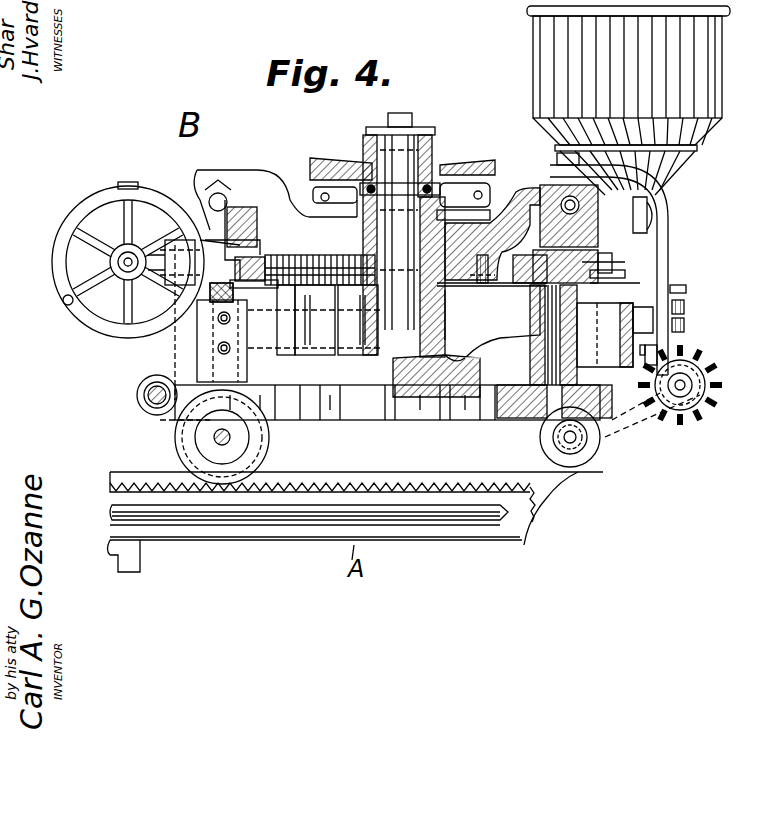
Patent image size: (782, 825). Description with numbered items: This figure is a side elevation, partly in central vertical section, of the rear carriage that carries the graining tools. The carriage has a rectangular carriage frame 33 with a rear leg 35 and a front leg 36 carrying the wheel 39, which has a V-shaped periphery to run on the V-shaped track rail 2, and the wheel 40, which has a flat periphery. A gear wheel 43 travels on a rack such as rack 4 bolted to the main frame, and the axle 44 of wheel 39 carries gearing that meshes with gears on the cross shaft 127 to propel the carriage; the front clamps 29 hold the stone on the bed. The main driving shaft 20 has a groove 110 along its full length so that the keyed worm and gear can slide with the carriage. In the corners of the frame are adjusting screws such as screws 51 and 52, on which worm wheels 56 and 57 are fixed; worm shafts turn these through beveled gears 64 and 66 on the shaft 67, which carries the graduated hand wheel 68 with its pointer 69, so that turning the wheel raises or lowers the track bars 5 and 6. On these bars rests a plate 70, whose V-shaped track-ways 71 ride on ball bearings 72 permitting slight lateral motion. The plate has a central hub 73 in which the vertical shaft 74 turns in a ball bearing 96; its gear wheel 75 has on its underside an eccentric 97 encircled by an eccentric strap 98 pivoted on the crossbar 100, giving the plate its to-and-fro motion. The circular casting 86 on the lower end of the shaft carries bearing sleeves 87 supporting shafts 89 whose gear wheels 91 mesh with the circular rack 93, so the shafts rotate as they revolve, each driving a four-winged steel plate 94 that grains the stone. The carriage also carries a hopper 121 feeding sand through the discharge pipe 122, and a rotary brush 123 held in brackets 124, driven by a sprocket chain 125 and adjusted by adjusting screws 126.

The V-shaped track rail 2 is at (440, 478).
The rack 4 is at (547, 519).
The track bar 5 is at (200, 232).
The track bar 6 is at (646, 232).
The main driving shaft 20 is at (270, 520).
The front clamps 29 is at (150, 378).
The carriage frame 33 is at (650, 344).
The rear leg 35 is at (214, 437).
The front leg 36 is at (598, 437).
The wheel 39 is at (266, 446).
The wheel 40 is at (548, 437).
The gear wheel 43 is at (115, 483).
The axle 44 is at (212, 437).
The adjusting screw 51 is at (172, 335).
The adjusting screw 52 is at (625, 292).
The worm wheel 56 is at (255, 270).
The worm wheel 57 is at (614, 265).
The beveled gear 64 is at (118, 262).
The beveled gear 66 is at (108, 318).
The shaft 67 is at (100, 268).
The graduated hand wheel 68 is at (111, 245).
The pointer 69 is at (128, 186).
The plate 70 is at (470, 280).
The V-shaped track-ways 71 is at (210, 196).
The ball bearings 72 is at (555, 195).
The central hub 73 is at (447, 338).
The vertical shaft 74 is at (375, 262).
The gear wheel 75 is at (345, 165).
The circular casting 86 is at (430, 398).
The bearing sleeves 87 is at (570, 342).
The shafts 89 is at (548, 322).
The gear wheels 91 is at (378, 294).
The circular rack 93 is at (486, 281).
The steel plate 94 is at (362, 425).
The ball bearing 96 is at (432, 172).
The eccentric 97 is at (470, 195).
The eccentric strap 98 is at (490, 195).
The crossbar 100 is at (313, 213).
The groove 110 is at (195, 520).
The hopper 121 is at (722, 74).
The discharge pipe 122 is at (686, 289).
The rotary brush 123 is at (722, 385).
The brackets 124 is at (669, 215).
The sprocket chain 125 is at (640, 425).
The adjusting screws 126 is at (684, 307).
The cross shaft 127 is at (140, 400).